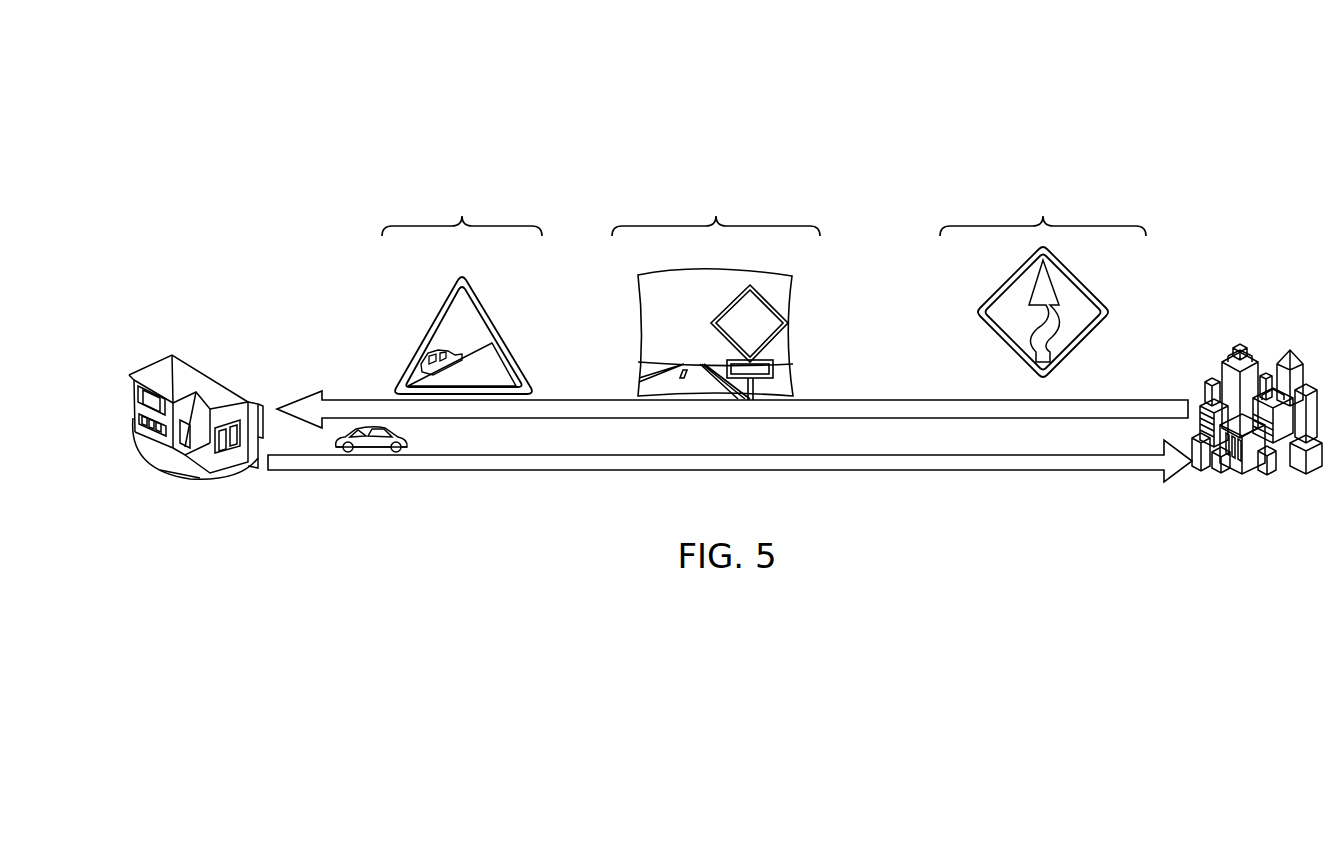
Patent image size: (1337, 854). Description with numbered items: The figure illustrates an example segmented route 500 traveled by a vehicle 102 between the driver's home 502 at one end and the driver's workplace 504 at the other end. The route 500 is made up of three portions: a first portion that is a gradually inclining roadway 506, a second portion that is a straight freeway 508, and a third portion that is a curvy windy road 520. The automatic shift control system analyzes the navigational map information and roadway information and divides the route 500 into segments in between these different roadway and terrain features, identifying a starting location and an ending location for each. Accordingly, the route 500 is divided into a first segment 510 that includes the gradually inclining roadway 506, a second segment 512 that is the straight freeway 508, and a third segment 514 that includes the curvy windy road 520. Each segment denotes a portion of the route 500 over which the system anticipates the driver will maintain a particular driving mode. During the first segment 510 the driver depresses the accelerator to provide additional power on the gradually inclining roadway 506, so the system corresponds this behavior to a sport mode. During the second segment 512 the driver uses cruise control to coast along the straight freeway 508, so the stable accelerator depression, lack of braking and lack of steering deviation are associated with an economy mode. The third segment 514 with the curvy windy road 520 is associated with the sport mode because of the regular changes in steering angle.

The route 500 is at (330, 131).
The vehicle 102 is at (409, 446).
The driver's home 502 is at (206, 481).
The driver's workplace 504 is at (1269, 470).
The gradually inclining roadway 506 is at (422, 340).
The straight freeway 508 is at (637, 370).
The first segment 510 is at (452, 291).
The second segment 512 is at (694, 294).
The third segment 514 is at (1028, 283).
The curvy windy road 520 is at (978, 312).